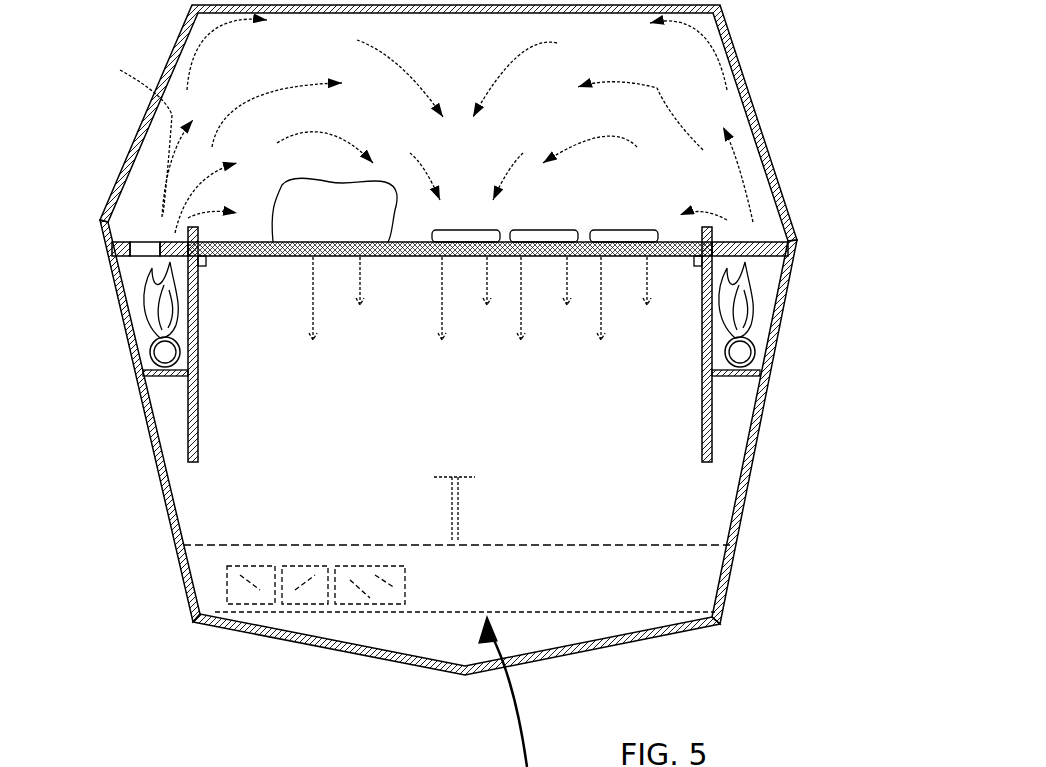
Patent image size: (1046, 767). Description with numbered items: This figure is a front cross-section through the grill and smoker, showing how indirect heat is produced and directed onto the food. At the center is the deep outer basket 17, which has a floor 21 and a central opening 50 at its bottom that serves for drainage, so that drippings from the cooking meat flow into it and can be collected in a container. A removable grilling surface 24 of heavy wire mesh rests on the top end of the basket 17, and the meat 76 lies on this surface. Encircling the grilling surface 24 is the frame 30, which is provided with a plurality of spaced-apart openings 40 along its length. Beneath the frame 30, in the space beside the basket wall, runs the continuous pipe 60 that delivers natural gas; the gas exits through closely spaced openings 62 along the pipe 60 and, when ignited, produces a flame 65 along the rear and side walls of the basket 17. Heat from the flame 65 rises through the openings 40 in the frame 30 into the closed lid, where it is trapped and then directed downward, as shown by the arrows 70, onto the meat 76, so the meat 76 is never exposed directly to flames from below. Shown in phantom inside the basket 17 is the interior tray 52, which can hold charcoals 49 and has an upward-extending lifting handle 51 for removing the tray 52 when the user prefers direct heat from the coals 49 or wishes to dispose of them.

The outer basket 17 is at (285, 459).
The floor 21 is at (723, 627).
The grilling surface 24 is at (398, 243).
The frame 30 is at (102, 218).
The openings 40 is at (152, 240).
The charcoals 49 is at (228, 568).
The central opening 50 is at (460, 675).
The lifting handle 51 is at (440, 512).
The interior tray 52 is at (537, 580).
The continuous pipe 60 is at (147, 343).
The openings 62 is at (153, 343).
The flame 65 is at (135, 257).
The arrows 70 is at (260, 90).
The meat 76 is at (312, 210).